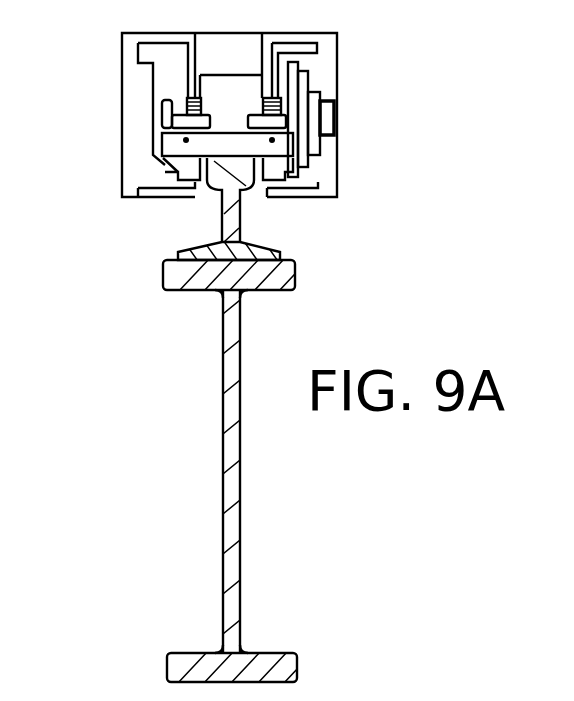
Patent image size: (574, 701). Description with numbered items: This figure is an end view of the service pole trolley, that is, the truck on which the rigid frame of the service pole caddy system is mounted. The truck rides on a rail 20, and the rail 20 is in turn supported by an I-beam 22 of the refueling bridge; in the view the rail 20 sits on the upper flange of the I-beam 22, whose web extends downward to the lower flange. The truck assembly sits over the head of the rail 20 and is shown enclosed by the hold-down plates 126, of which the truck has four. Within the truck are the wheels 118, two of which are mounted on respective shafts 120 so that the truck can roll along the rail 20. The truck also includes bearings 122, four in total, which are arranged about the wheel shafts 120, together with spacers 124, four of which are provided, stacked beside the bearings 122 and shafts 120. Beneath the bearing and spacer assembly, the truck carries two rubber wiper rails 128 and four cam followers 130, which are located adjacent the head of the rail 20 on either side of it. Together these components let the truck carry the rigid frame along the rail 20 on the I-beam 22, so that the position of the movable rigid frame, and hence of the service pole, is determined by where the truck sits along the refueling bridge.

The rail 20 is at (180, 247).
The I-beam 22 is at (228, 660).
The wheels 118 is at (240, 90).
The shafts 120 is at (334, 118).
The bearings 122 is at (303, 153).
The spacers 124 is at (290, 63).
The hold-down plates 126 is at (132, 94).
The rubber wiper rails 128 is at (263, 147).
The cam followers 130 is at (188, 168).